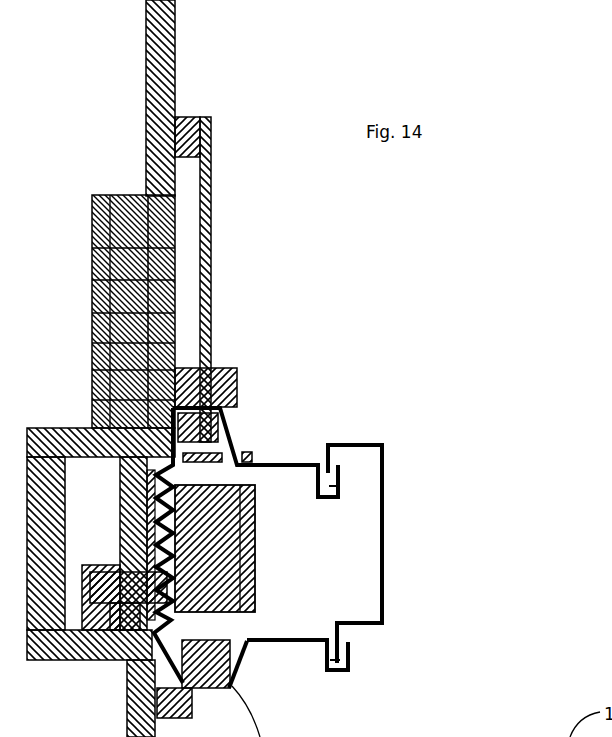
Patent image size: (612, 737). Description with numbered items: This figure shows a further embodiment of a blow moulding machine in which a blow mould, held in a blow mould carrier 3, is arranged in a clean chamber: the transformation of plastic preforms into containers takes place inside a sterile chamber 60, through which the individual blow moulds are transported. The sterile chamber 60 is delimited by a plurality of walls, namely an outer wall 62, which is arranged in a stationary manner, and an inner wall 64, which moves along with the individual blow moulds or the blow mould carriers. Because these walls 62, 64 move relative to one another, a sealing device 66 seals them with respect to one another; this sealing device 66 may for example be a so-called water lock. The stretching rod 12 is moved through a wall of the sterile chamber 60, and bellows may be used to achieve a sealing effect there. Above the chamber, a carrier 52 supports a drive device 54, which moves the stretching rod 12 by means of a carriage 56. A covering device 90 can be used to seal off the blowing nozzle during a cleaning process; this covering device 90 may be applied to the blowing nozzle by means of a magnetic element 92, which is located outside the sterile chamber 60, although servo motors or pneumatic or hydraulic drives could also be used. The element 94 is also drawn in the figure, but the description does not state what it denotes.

The drive device 54 is at (176, 56).
The carriage 56 is at (175, 138).
The stretching rod 12 is at (212, 232).
The carrier 52 is at (150, 291).
The support block 94 is at (100, 356).
The covering device 90 is at (219, 435).
The magnetic element 92 is at (252, 457).
The blow mould carrier 3 is at (238, 565).
The sterile chamber 60 is at (336, 585).
The outer wall 62 is at (383, 541).
The sealing device 66 is at (340, 487).
The inner wall 64 is at (293, 643).